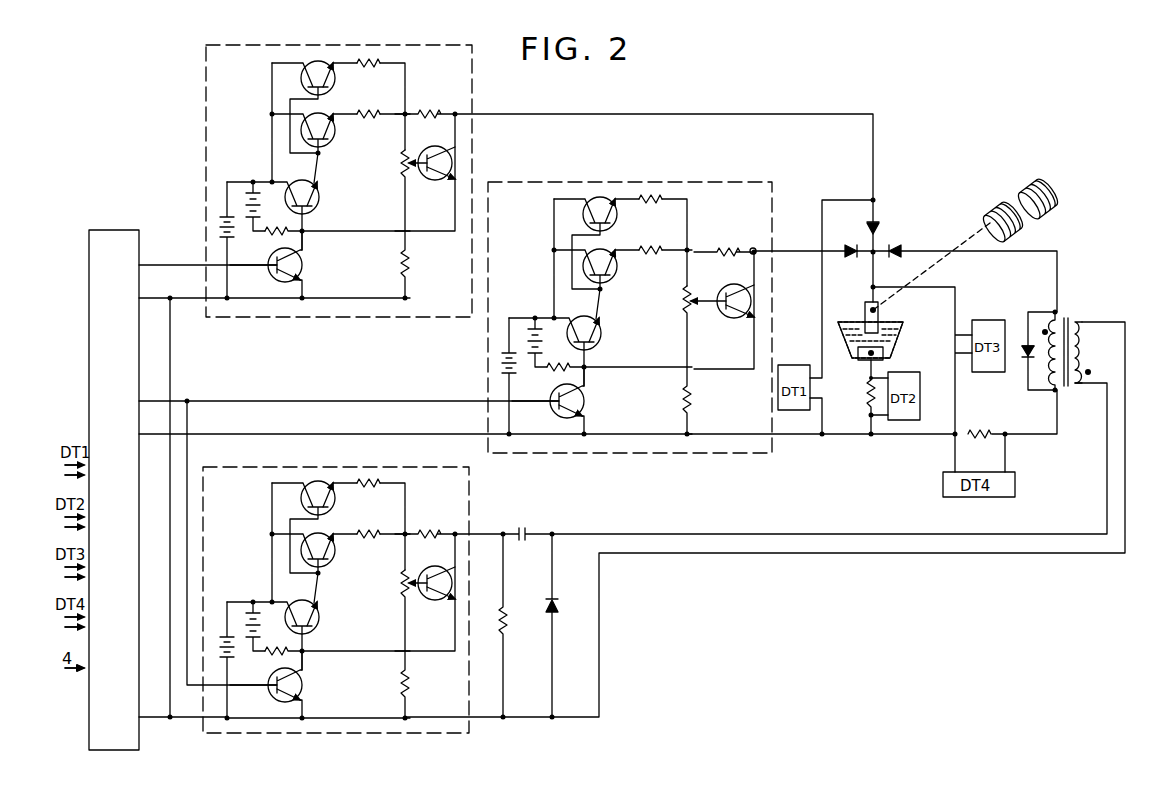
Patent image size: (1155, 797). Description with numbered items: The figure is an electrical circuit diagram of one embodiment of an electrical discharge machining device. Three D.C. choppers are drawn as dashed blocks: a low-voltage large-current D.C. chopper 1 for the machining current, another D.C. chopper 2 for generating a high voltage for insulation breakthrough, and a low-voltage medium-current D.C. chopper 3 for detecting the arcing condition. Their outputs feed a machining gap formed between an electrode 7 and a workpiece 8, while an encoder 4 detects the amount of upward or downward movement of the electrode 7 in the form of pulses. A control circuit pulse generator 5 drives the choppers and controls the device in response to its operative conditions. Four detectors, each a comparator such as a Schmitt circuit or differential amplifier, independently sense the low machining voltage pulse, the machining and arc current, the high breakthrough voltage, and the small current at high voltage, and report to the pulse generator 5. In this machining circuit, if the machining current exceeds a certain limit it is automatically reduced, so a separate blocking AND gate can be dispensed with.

The low-voltage large-current D.C. chopper 1 is at (632, 183).
The D.C. chopper for generating a high voltage 2 is at (470, 520).
The low-voltage medium-current D.C. chopper 3 is at (350, 46).
The encoder 4 is at (1035, 186).
The control circuit pulse generator 5 is at (112, 248).
The electrode 7 is at (868, 322).
The workpiece 8 is at (862, 357).